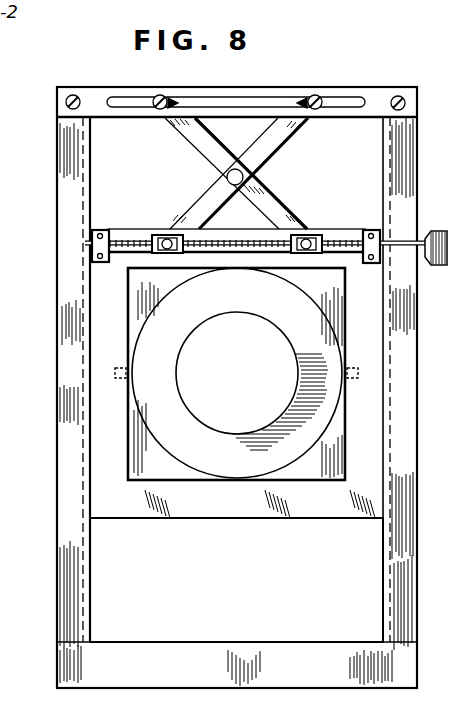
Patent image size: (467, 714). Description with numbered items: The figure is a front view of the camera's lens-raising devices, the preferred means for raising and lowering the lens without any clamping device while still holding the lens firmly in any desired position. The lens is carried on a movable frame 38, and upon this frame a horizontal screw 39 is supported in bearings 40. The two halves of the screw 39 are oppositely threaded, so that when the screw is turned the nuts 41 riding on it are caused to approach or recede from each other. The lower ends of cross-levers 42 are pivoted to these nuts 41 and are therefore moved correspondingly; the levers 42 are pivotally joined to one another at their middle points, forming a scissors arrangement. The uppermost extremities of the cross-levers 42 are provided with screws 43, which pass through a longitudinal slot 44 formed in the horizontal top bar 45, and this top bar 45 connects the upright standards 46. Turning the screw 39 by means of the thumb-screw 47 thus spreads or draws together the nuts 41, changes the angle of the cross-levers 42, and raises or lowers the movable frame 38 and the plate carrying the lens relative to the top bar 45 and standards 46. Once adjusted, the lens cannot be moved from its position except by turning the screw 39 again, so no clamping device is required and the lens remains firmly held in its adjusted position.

The movable frame 38 is at (237, 393).
The horizontal screw 39 is at (127, 238).
The bearings 40 is at (92, 254).
The nuts 41 is at (157, 237).
The cross-levers 42 is at (258, 146).
The screws 43 is at (158, 95).
The longitudinal slot 44 is at (359, 96).
The horizontal top bar 45 is at (125, 118).
The standards 46 is at (62, 560).
The thumb-screw 47 is at (437, 265).